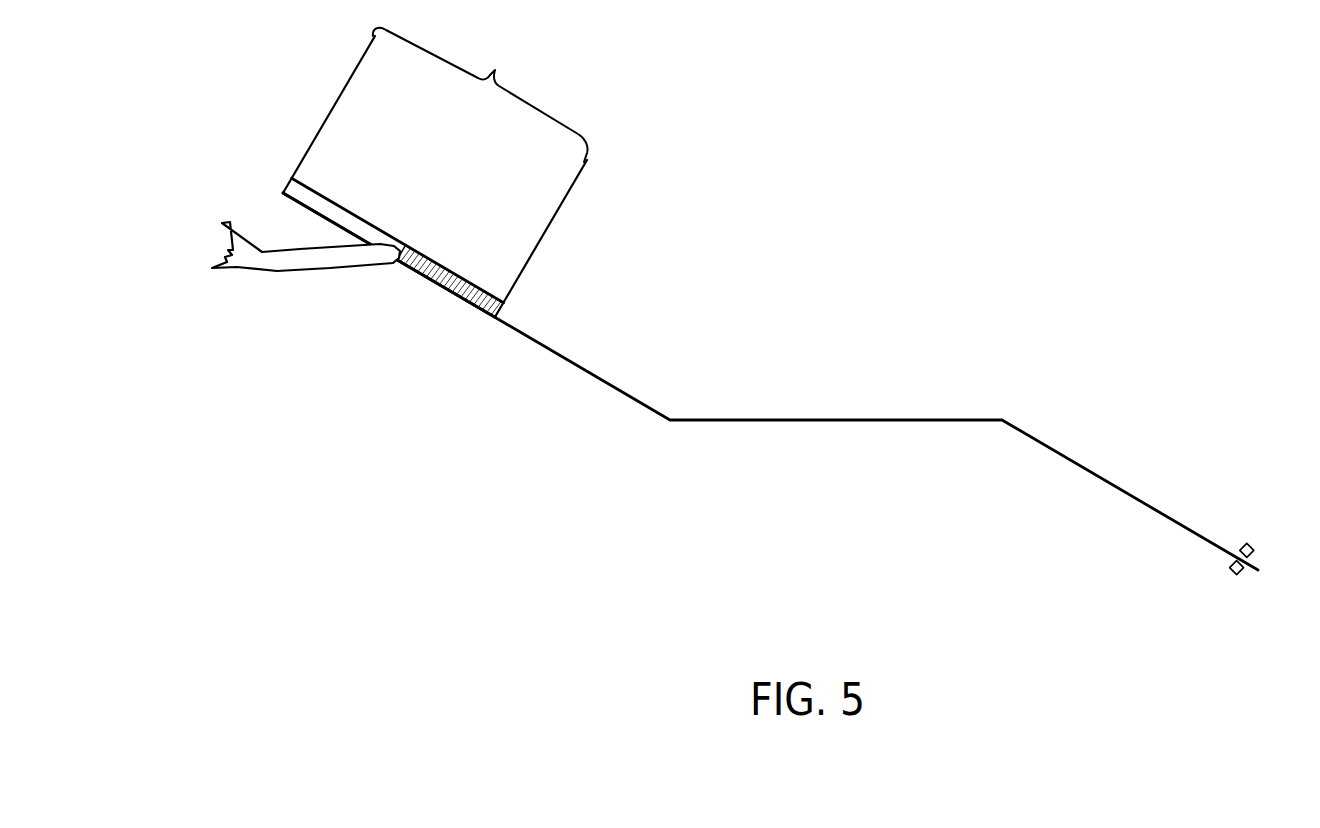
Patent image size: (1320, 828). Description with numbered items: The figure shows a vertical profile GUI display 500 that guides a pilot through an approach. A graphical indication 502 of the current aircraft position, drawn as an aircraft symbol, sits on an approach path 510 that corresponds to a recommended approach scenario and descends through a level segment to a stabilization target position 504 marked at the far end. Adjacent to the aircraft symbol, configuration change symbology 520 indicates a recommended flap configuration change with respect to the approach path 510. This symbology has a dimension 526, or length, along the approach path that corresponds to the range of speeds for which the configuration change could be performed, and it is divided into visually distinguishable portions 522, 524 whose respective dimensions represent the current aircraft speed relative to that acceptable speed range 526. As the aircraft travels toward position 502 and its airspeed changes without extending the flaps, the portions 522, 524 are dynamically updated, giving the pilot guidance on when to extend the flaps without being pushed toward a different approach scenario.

The vertical profile GUI display 500 is at (1058, 168).
The graphical indication of current aircraft position 502 is at (290, 271).
The stabilization target position 504 is at (1250, 543).
The approach path 510 is at (863, 408).
The configuration change symbology 520 is at (407, 242).
The first portion of configuration change symbology 522 is at (342, 202).
The second portion of configuration change symbology 524 is at (473, 272).
The dimension of configuration change symbology 526 is at (435, 172).